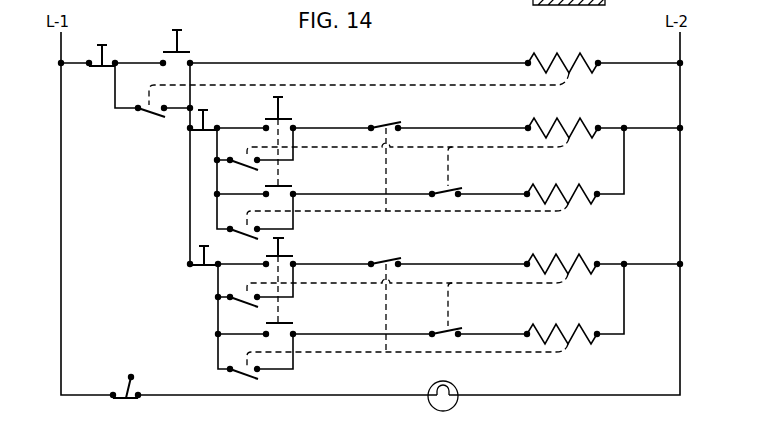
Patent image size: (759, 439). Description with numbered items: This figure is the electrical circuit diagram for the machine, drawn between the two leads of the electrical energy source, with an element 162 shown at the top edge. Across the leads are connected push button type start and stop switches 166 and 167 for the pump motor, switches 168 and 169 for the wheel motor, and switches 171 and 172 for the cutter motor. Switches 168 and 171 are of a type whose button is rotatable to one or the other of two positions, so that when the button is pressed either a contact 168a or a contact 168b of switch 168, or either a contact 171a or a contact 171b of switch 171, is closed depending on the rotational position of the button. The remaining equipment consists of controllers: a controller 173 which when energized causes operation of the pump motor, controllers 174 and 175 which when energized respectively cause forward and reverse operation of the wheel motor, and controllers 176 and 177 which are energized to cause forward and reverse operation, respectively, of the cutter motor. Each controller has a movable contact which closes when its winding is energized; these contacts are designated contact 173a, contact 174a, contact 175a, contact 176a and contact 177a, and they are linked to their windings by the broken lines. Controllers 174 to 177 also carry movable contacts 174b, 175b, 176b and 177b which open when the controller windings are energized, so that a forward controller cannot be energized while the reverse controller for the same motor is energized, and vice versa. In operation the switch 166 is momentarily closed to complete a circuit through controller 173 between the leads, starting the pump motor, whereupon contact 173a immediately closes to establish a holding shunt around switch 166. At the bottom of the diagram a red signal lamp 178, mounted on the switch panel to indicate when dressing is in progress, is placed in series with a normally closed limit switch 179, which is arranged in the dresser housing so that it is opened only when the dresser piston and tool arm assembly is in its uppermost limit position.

The heating element 162 is at (597, 4).
The start switch 166 is at (177, 50).
The stop switch 167 is at (107, 50).
The switch 168 is at (281, 100).
The contact 168a is at (287, 118).
The contact 168b is at (287, 186).
The switch 169 is at (224, 110).
The switch 171 is at (283, 241).
The contact 171a is at (284, 255).
The contact 171b is at (285, 323).
The switch 172 is at (195, 258).
The controller 173 is at (584, 58).
The movable contact 173a is at (146, 116).
The controller 174 is at (584, 122).
The movable contact 174a is at (244, 169).
The movable contact 174b is at (450, 190).
The controller 175 is at (558, 190).
The movable contact 175a is at (242, 237).
The movable contact 175b is at (384, 125).
The controller 176 is at (580, 258).
The movable contact 176a is at (243, 300).
The movable contact 176b is at (450, 330).
The controller 177 is at (558, 330).
The movable contact 177a is at (243, 371).
The movable contact 177b is at (387, 262).
The red signal lamp 178 is at (453, 388).
The limit switch 179 is at (136, 378).